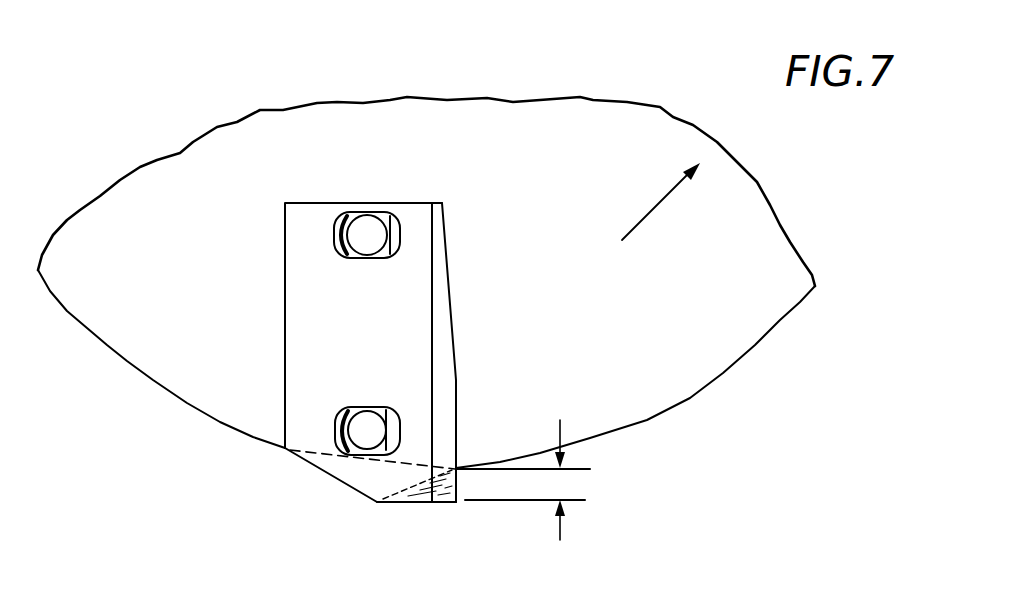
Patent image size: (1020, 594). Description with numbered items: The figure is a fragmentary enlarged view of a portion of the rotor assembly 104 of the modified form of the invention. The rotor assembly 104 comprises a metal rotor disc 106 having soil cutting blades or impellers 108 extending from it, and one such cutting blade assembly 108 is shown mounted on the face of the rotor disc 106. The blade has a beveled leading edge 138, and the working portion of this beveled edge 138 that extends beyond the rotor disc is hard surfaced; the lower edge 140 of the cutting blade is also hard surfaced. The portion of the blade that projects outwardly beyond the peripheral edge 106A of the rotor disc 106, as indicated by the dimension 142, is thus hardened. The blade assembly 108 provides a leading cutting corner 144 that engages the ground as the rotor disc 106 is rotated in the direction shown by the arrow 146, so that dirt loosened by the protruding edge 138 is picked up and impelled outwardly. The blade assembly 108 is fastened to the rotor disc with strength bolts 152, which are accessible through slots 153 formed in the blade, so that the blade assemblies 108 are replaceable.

The rotor assembly 104 is at (607, 128).
The rotor disc 106 is at (708, 355).
The peripheral edge of the rotor disc 106A is at (652, 422).
The cutting blade assembly 108 is at (249, 300).
The beveled leading edge 138 is at (445, 420).
The lower edge 140 is at (408, 503).
The dimension 142 is at (558, 484).
The leading cutting corner 144 is at (459, 503).
The arrow 146 is at (660, 212).
The strength bolts 152 is at (371, 232).
The slots 153 is at (357, 208).